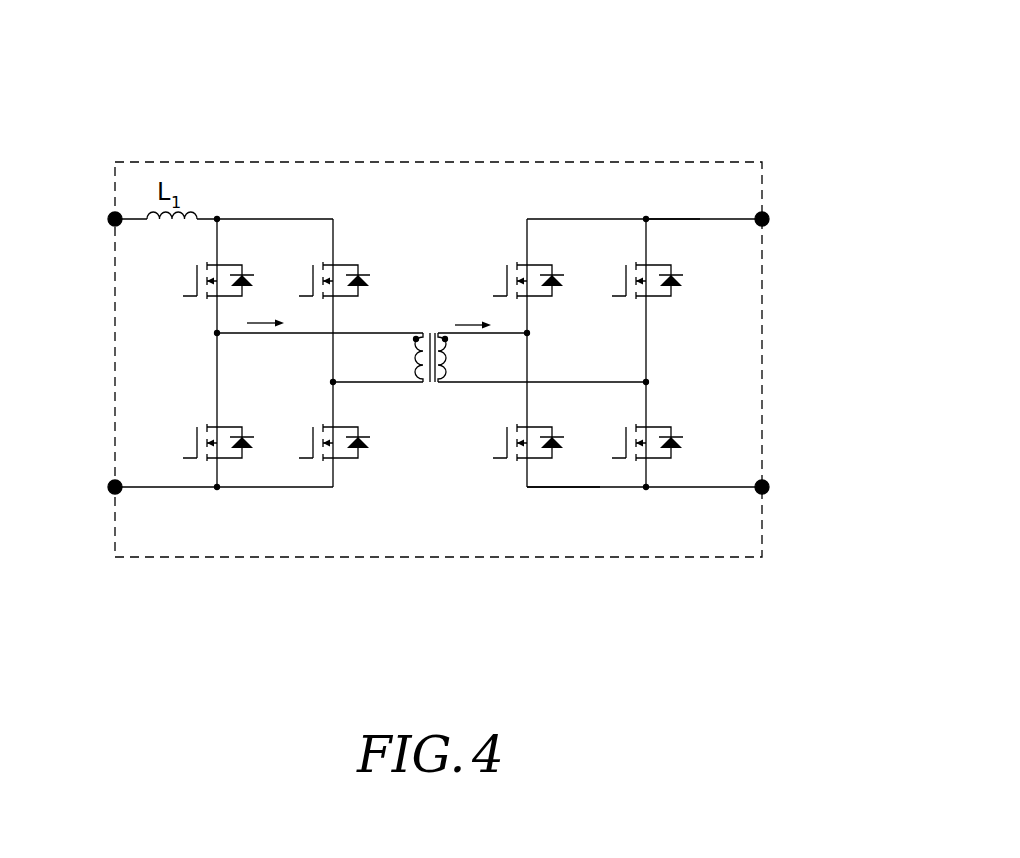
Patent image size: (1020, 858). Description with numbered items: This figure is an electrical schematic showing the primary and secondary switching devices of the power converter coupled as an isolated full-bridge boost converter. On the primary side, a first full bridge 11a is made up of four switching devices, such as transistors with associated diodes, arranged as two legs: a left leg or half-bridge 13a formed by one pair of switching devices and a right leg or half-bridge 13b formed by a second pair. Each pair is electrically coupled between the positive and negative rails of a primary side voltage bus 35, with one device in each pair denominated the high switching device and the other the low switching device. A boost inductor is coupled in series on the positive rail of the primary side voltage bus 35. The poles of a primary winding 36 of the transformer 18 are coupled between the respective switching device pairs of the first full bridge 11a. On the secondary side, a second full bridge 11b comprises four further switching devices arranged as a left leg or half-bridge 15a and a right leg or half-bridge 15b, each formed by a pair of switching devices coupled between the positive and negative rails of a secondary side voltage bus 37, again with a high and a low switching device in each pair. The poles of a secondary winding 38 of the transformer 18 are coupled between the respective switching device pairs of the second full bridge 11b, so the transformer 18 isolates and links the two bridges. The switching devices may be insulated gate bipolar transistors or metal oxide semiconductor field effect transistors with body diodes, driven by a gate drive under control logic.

The first full bridge 11a is at (373, 192).
The second full bridge 11b is at (560, 192).
The left leg or half-bridge 13a is at (221, 209).
The right leg or half-bridge 13b is at (340, 492).
The left leg or half-bridge 15a is at (549, 480).
The right leg or half-bridge 15b is at (674, 224).
The transformer 18 is at (419, 360).
The primary side voltage bus 35 is at (132, 222).
The primary winding 36 is at (385, 352).
The secondary side voltage bus 37 is at (745, 222).
The secondary winding 38 is at (457, 352).